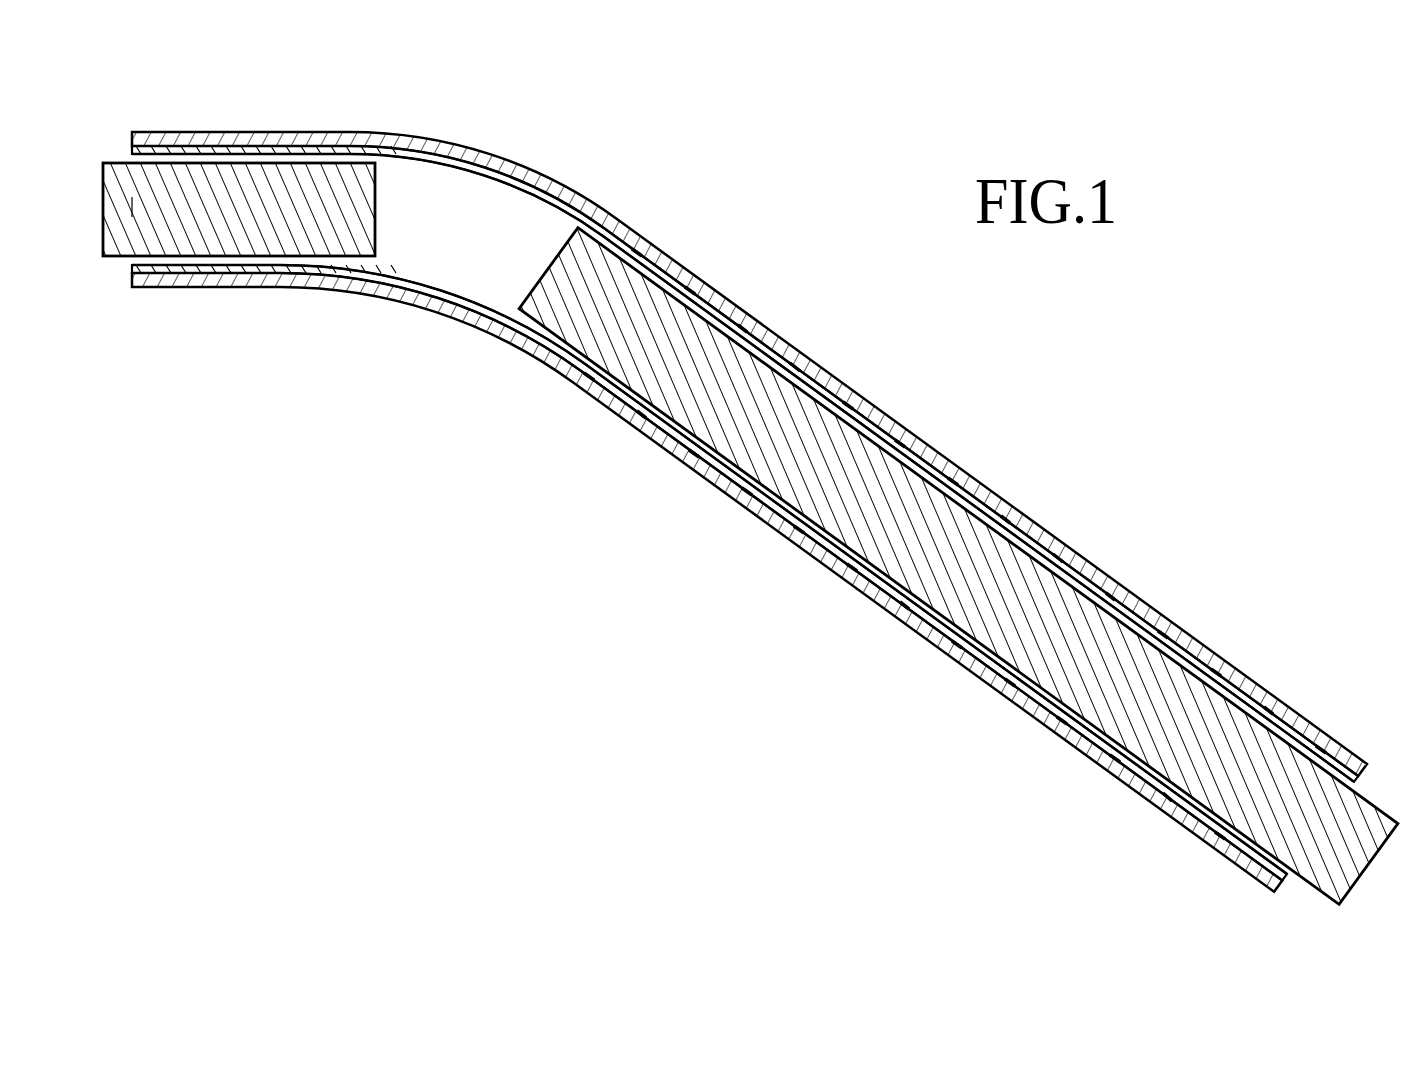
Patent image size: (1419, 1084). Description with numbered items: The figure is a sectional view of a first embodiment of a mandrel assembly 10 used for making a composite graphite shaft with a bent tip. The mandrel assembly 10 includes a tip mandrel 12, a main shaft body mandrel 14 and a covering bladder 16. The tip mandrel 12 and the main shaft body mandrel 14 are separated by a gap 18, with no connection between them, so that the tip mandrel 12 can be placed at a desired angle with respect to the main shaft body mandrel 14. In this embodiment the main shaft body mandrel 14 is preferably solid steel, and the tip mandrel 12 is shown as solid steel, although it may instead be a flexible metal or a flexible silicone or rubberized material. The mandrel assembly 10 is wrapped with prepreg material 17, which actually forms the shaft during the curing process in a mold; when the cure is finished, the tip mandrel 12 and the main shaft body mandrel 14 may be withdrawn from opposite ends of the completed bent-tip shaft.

The mandrel assembly 10 is at (271, 98).
The tip mandrel 12 is at (236, 232).
The main shaft body mandrel 14 is at (857, 517).
The covering bladder 16 is at (497, 176).
The prepreg material 17 is at (745, 320).
The gap 18 is at (462, 257).